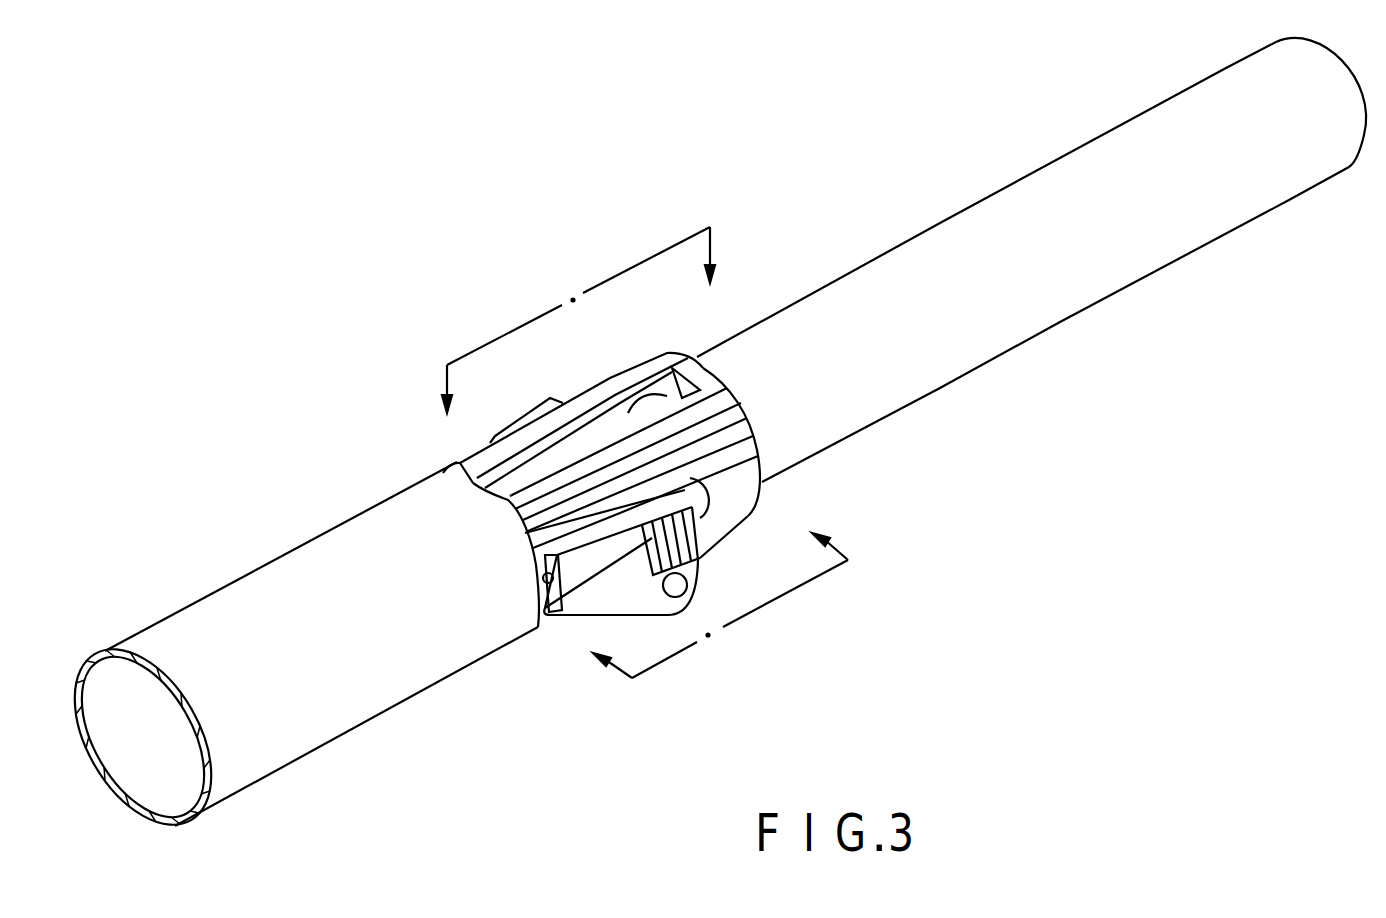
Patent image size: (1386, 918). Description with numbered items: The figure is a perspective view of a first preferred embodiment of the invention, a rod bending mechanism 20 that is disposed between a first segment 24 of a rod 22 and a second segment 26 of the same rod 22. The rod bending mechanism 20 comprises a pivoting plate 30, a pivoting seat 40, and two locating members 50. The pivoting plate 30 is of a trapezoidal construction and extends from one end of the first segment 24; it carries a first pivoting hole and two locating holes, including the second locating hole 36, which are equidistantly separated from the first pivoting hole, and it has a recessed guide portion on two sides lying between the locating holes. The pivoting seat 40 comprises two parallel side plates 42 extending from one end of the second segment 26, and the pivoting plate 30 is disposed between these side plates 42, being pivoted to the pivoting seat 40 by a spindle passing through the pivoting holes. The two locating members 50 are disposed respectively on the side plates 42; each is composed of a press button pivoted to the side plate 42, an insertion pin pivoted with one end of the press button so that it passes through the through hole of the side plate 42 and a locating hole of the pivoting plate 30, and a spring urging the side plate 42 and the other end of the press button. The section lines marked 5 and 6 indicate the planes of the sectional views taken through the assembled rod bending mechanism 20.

The rod bending mechanism 20 is at (528, 253).
The rod 22 is at (327, 520).
The first segment 24 is at (265, 580).
The second segment 26 is at (915, 252).
The pivoting plate 30 is at (614, 428).
The second locating hole 36 is at (697, 590).
The pivoting seat 40 is at (772, 498).
The side plates 42 is at (473, 450).
The locating members 50 is at (570, 602).
The section line 5- 5 is at (719, 610).
The section line 6- 6 is at (571, 307).